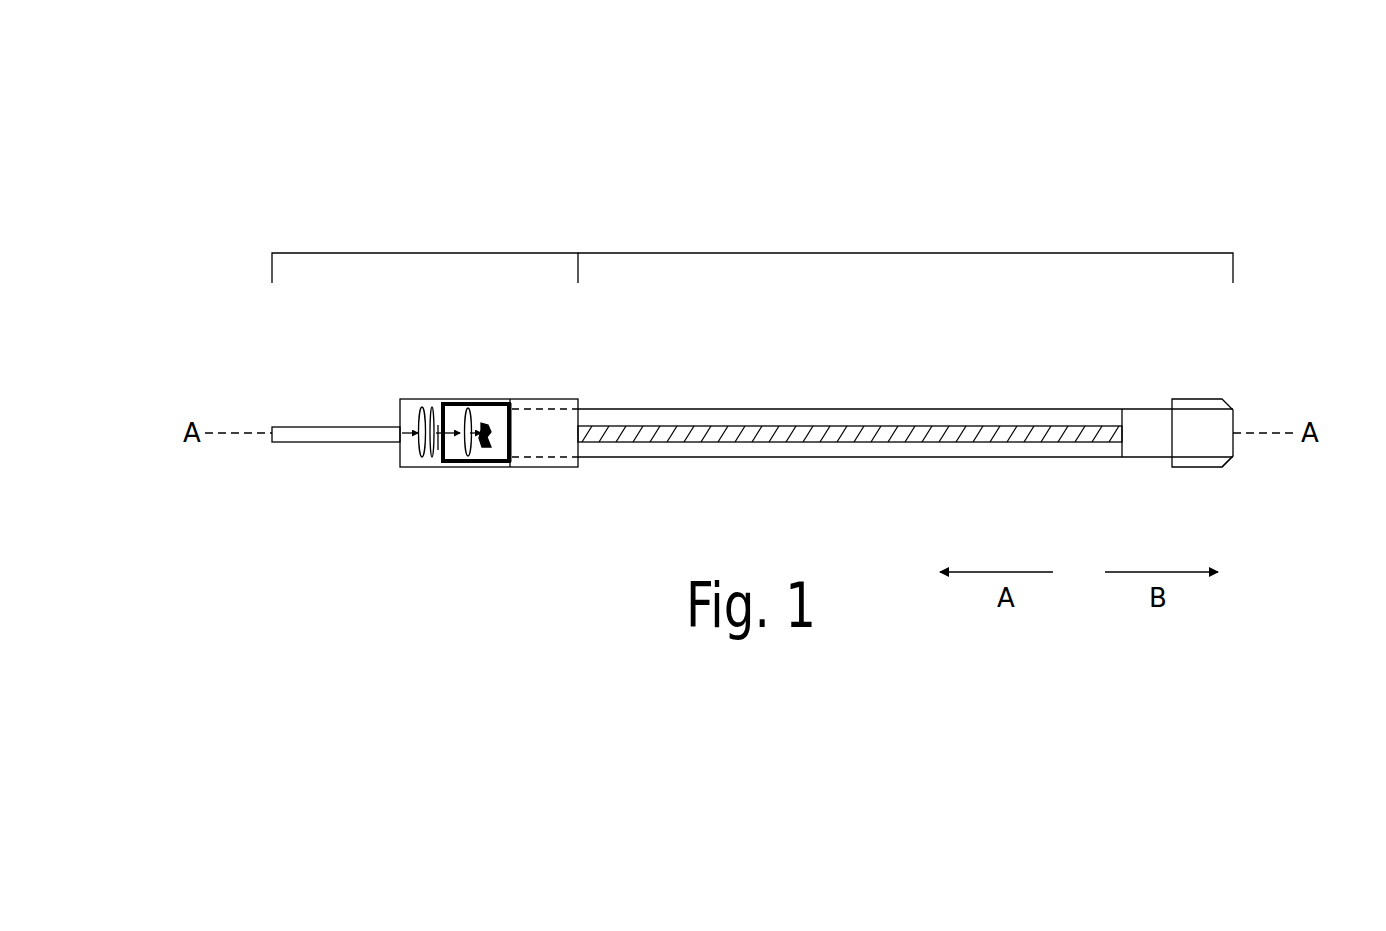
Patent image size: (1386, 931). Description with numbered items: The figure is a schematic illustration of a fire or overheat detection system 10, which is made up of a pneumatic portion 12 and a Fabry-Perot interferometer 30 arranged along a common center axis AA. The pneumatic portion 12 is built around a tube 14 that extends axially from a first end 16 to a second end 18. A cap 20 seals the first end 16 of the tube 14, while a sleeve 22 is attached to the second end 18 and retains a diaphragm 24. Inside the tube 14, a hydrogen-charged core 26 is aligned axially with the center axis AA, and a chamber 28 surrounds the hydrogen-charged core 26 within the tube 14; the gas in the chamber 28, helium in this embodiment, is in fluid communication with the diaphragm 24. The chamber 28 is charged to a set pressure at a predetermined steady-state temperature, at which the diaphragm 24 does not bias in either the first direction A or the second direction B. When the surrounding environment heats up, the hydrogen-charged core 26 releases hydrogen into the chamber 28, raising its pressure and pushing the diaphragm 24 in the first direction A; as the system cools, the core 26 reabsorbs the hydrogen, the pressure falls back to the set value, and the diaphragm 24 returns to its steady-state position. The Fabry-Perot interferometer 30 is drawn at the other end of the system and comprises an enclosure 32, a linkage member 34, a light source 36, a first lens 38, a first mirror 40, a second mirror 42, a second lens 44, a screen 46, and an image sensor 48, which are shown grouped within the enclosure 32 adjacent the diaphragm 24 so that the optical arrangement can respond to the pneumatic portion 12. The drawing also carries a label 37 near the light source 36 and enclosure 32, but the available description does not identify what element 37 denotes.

The fire or overheat detection system 10 is at (1050, 152).
The pneumatic portion 12 is at (950, 253).
The tube 14 is at (932, 409).
The first end 16 is at (1230, 459).
The second end 18 is at (532, 401).
The cap 20 is at (1205, 399).
The sleeve 22 is at (560, 399).
The diaphragm 24 is at (515, 449).
The hydrogen-charged core 26 is at (750, 442).
The chamber 28 is at (913, 451).
The Fabry-Perot interferometer 30 is at (420, 253).
The enclosure 32 is at (420, 398).
The linkage member 34 is at (462, 402).
The light source 36 is at (313, 427).
The washer 37 is at (415, 425).
The first lens 38 is at (405, 447).
The first mirror 40 is at (432, 458).
The second mirror 42 is at (438, 450).
The second lens 44 is at (467, 463).
The screen 46 is at (490, 402).
The image sensor 48 is at (497, 448).